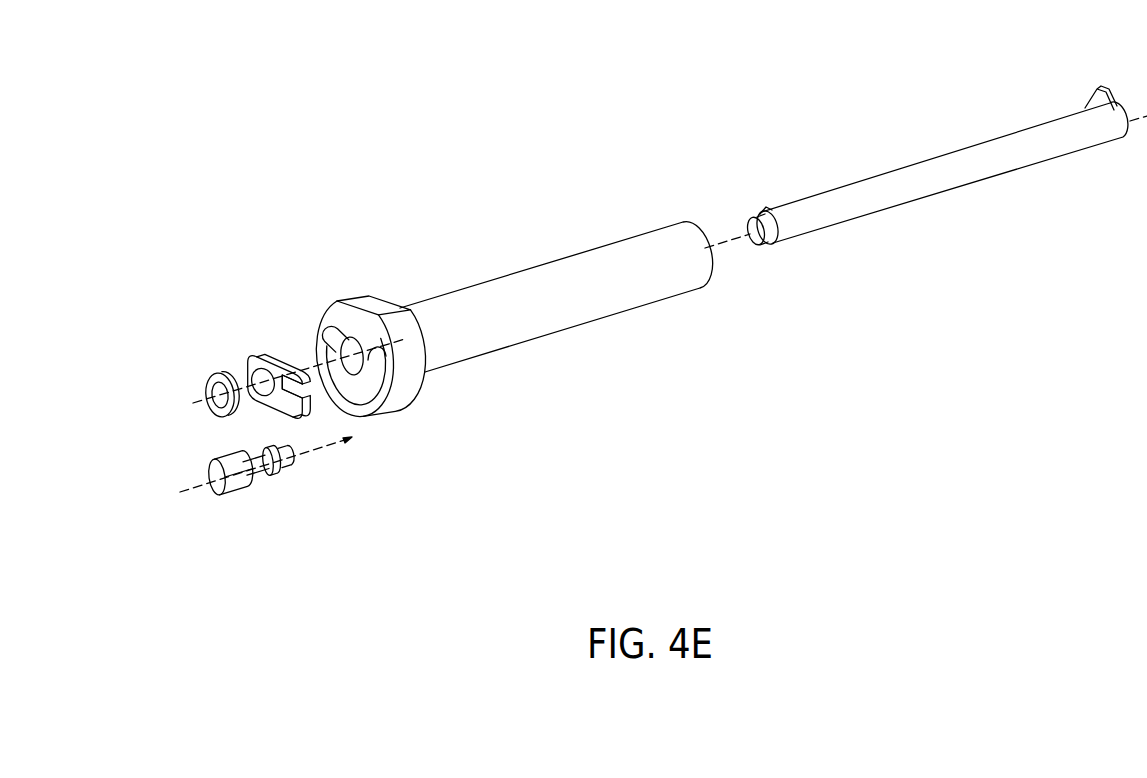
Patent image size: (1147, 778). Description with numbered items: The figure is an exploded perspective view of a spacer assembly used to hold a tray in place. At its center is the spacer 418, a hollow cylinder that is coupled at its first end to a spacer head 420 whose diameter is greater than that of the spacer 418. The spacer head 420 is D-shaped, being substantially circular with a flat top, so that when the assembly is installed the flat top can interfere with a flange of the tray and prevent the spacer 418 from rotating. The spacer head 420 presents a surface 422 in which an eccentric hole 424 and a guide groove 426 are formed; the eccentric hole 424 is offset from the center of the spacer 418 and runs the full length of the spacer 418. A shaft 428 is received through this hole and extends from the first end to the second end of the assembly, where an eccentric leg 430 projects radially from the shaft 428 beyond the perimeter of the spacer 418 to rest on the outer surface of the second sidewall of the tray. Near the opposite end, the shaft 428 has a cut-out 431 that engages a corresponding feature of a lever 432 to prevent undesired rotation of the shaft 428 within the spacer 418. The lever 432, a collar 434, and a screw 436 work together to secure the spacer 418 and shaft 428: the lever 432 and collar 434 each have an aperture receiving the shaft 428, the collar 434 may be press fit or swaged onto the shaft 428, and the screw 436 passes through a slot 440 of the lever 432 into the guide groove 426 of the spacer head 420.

The spacer 418 is at (537, 330).
The spacer head 420 is at (407, 395).
The surface 422 is at (362, 333).
The eccentric hole 424 is at (343, 352).
The guide groove 426 is at (357, 397).
The shaft 428 is at (853, 203).
The eccentric leg 430 is at (1093, 102).
The cut-out 431 is at (762, 213).
The lever 432 is at (268, 350).
The collar 434 is at (222, 372).
The screw 436 is at (233, 478).
The slot 440 is at (310, 398).